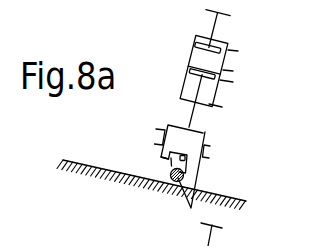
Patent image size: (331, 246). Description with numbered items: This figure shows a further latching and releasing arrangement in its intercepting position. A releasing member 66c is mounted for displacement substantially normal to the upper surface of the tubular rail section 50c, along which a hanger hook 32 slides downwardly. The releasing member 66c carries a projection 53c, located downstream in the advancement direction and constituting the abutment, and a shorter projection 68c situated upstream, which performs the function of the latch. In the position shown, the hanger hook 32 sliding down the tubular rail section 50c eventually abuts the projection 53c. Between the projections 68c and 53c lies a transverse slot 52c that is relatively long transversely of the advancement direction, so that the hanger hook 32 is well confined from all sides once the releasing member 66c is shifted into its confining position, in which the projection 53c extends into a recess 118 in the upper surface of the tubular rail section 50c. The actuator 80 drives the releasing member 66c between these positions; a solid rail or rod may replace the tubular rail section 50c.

The hydraulic cylinder actuator 80 is at (188, 50).
The releasing member 66c is at (203, 133).
The projection 68c is at (163, 158).
The transverse slot 52c is at (204, 164).
The projection 53c is at (194, 182).
The tubular rail section 50c is at (93, 165).
The hanger hook 32 is at (168, 177).
The recess 118 is at (188, 208).